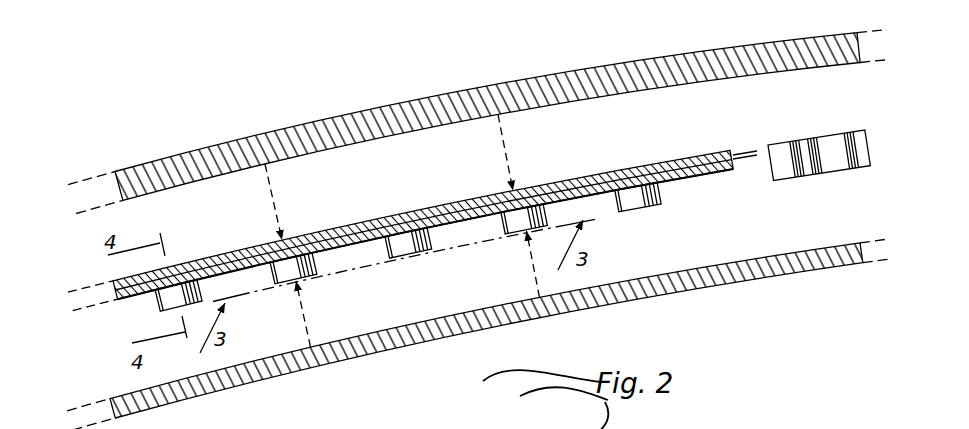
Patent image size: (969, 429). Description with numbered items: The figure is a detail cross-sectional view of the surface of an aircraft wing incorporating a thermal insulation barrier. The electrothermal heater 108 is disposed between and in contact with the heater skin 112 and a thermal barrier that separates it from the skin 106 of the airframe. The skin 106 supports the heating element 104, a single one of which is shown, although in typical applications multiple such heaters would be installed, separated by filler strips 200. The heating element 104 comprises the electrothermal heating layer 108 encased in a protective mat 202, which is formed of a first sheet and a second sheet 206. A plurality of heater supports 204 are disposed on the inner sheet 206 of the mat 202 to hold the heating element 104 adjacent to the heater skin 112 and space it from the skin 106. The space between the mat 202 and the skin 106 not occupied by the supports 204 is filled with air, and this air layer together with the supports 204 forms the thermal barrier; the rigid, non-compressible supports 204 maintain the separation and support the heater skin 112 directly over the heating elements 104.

The heater skin 112 is at (343, 128).
The skin 106 is at (373, 344).
The electrothermal heater 108 is at (329, 226).
The protective mat 202 is at (433, 206).
The second sheet 206 is at (466, 225).
The heater supports 204 is at (397, 247).
The heating element 104 is at (682, 160).
The filler strips 200 is at (827, 145).